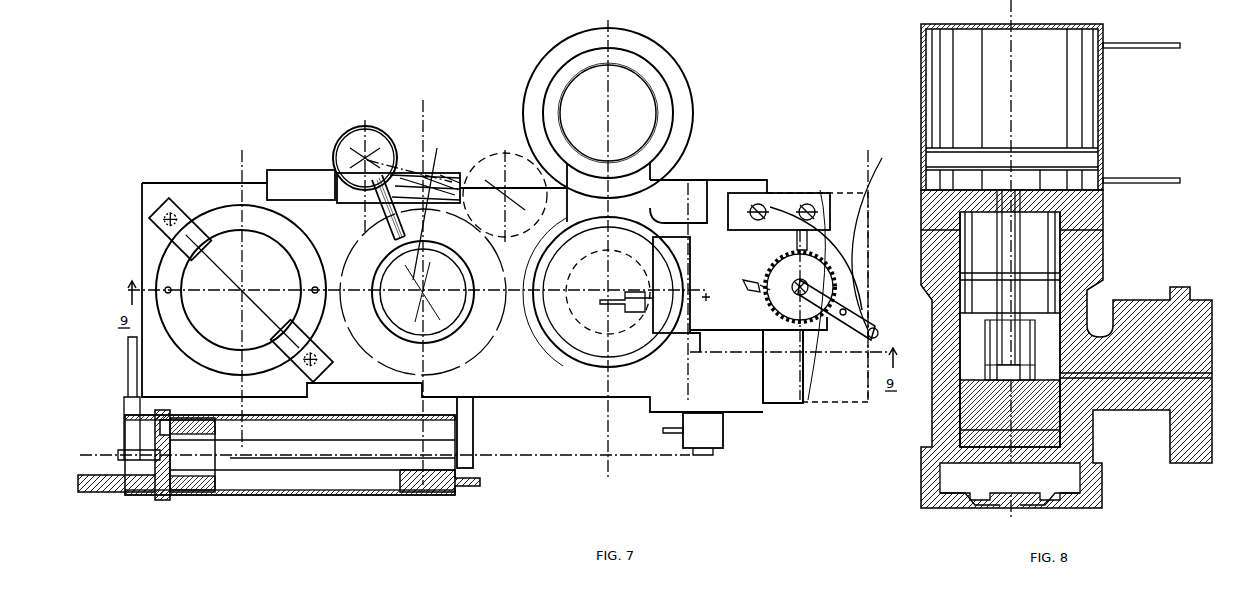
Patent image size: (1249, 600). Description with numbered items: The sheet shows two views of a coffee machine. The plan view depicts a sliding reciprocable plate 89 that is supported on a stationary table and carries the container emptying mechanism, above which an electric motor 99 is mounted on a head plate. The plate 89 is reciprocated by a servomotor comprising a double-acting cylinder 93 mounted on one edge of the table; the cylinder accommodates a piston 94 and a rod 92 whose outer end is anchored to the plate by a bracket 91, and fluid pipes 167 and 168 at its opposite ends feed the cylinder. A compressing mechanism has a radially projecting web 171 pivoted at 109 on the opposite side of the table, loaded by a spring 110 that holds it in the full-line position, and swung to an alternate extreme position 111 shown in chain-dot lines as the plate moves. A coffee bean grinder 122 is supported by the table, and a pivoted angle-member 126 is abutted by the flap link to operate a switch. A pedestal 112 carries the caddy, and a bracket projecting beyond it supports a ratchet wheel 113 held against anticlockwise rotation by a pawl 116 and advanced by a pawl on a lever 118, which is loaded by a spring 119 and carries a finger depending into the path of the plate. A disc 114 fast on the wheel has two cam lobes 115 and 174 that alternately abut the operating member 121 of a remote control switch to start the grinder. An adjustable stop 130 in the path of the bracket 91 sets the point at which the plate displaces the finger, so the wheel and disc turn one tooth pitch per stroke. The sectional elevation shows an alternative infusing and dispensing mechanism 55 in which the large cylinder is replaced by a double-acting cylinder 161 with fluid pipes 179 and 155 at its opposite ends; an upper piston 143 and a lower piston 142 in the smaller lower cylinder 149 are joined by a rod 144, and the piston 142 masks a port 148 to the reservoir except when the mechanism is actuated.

In FIG. 7, the sliding reciprocable plate 89 is at (208, 190).
In FIG. 7, the electric motor 99 is at (260, 235).
In FIG. 7, the spring 110 is at (345, 150).
In FIG. 7, the pivot 109 is at (368, 150).
In FIG. 7, the radially projecting web 171 is at (405, 175).
In FIG. 7, the alternate extreme position 111 is at (490, 160).
In FIG. 7, the coffee bean grinder 122 is at (640, 93).
In FIG. 7, the pedestal 112 is at (728, 190).
In FIG. 7, the disc 114 is at (775, 205).
In FIG. 7, the ratchet wheel 113 is at (816, 205).
In FIG. 7, the operating member 121 is at (805, 200).
In FIG. 7, the spring 119 is at (876, 168).
In FIG. 7, the lever 118 is at (878, 330).
In FIG. 7, the pawl 116 is at (750, 278).
In FIG. 7, the pivoted angle-member 126 is at (628, 290).
In FIG. 7, the cam lobe 174 is at (783, 366).
In FIG. 7, the cam lobe 115 is at (808, 400).
In FIG. 7, the adjustable stop 130 is at (670, 435).
In FIG. 7, the bracket 91 is at (470, 425).
In FIG. 7, the double-acting cylinder 93 is at (293, 497).
In FIG. 7, the rod 92 is at (368, 475).
In FIG. 7, the piston 94 is at (198, 500).
In FIG. 7, the fluid pipe 167 is at (105, 490).
In FIG. 7, the fluid pipe 168 is at (462, 487).
In FIG. 8, the double-acting cylinder 161 is at (1108, 92).
In FIG. 8, the fluid pipe 155 is at (1150, 48).
In FIG. 8, the piston 143 is at (1103, 158).
In FIG. 8, the fluid pipe 179 is at (1165, 180).
In FIG. 8, the infusing and dispensing mechanism 55 is at (1113, 281).
In FIG. 8, the port 148 is at (1200, 375).
In FIG. 8, the rod 144 is at (1010, 240).
In FIG. 8, the piston 142 is at (1060, 418).
In FIG. 8, the lower cylinder 149 is at (960, 447).